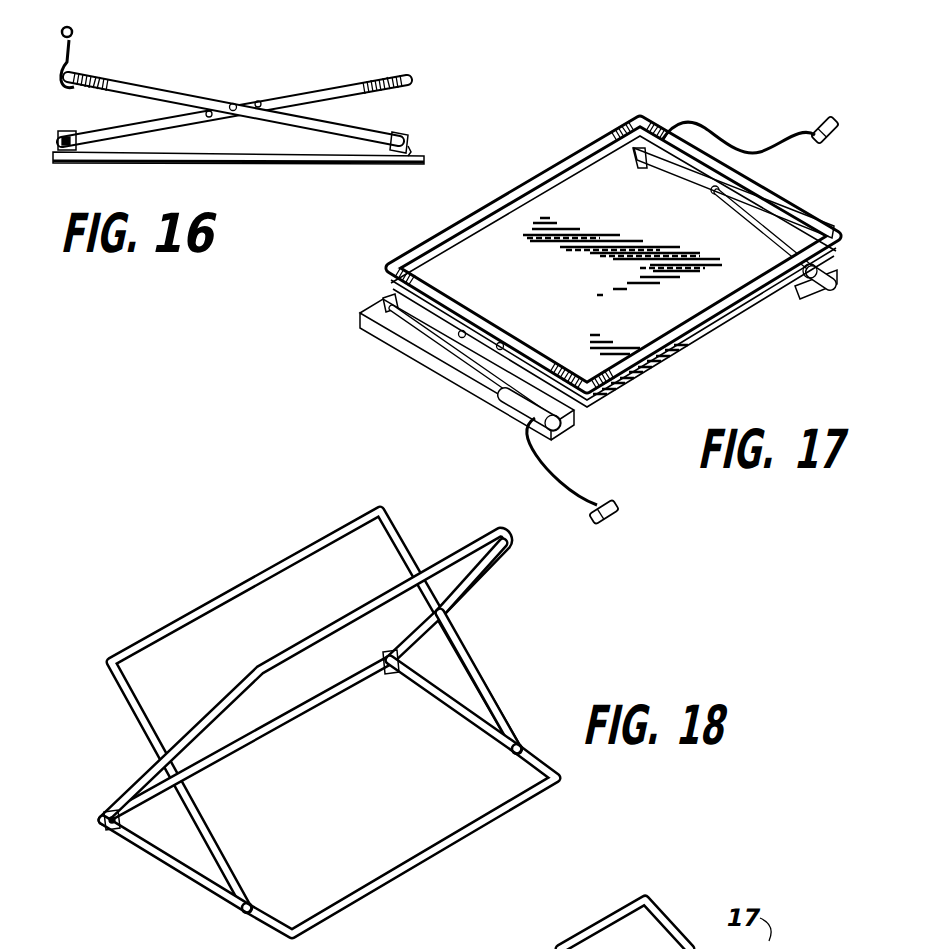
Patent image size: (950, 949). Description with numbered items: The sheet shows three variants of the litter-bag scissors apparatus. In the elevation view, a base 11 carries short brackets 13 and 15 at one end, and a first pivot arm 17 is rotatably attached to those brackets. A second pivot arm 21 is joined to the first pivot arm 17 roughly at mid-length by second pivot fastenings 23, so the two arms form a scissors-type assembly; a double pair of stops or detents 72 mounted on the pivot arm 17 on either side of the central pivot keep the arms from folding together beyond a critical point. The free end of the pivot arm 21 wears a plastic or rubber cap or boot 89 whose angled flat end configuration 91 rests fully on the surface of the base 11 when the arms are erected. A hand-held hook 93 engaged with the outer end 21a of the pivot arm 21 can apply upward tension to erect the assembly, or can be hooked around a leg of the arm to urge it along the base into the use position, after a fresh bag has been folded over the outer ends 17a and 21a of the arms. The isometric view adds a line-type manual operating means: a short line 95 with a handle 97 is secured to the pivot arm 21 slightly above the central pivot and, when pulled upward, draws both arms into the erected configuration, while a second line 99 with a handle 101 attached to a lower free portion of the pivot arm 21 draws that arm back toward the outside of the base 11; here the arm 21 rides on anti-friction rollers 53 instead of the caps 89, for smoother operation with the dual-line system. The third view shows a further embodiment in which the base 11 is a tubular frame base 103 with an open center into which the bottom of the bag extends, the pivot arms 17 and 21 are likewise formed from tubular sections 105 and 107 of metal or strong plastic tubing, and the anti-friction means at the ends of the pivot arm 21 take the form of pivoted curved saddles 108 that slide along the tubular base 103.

In FIG. 16, the base 11 is at (298, 160).
In FIG. 17, the base 11 is at (598, 355).
In FIG. 17, the bracket 13 is at (384, 302).
In FIG. 17, the bracket 15 is at (634, 163).
In FIG. 16, the first pivot arm 17 is at (251, 81).
In FIG. 18, the first pivot arm 17 is at (362, 607).
In FIG. 16, the outer end of pivot arm 17 17a is at (410, 78).
In FIG. 16, the second pivot arm 21 is at (218, 89).
In FIG. 17, the second pivot arm 21 is at (598, 146).
In FIG. 18, the second pivot arm 21 is at (313, 543).
In FIG. 16, the outer end of pivot arm 21 21a is at (74, 70).
In FIG. 16, the second pivot fastenings 23 is at (233, 103).
In FIG. 17, the second pivot fastenings 23 is at (437, 361).
In FIG. 17, the anti-friction roller 53 is at (580, 405).
In FIG. 16, the stops or detents 72 is at (259, 101).
In FIG. 17, the stops or detents 72 is at (496, 339).
In FIG. 16, the cap or boot 89 is at (400, 135).
In FIG. 16, the flat end configuration 91 is at (410, 149).
In FIG. 16, the hook 93 is at (73, 30).
In FIG. 17, the short line 95 is at (712, 122).
In FIG. 17, the handle 97 is at (846, 118).
In FIG. 17, the second line 99 is at (533, 451).
In FIG. 17, the handle 101 is at (615, 505).
In FIG. 18, the tubular frame base 103 is at (298, 716).
In FIG. 18, the tubular section 105 is at (480, 578).
In FIG. 18, the tubular section 107 is at (478, 658).
In FIG. 18, the curved saddles 108 is at (512, 752).